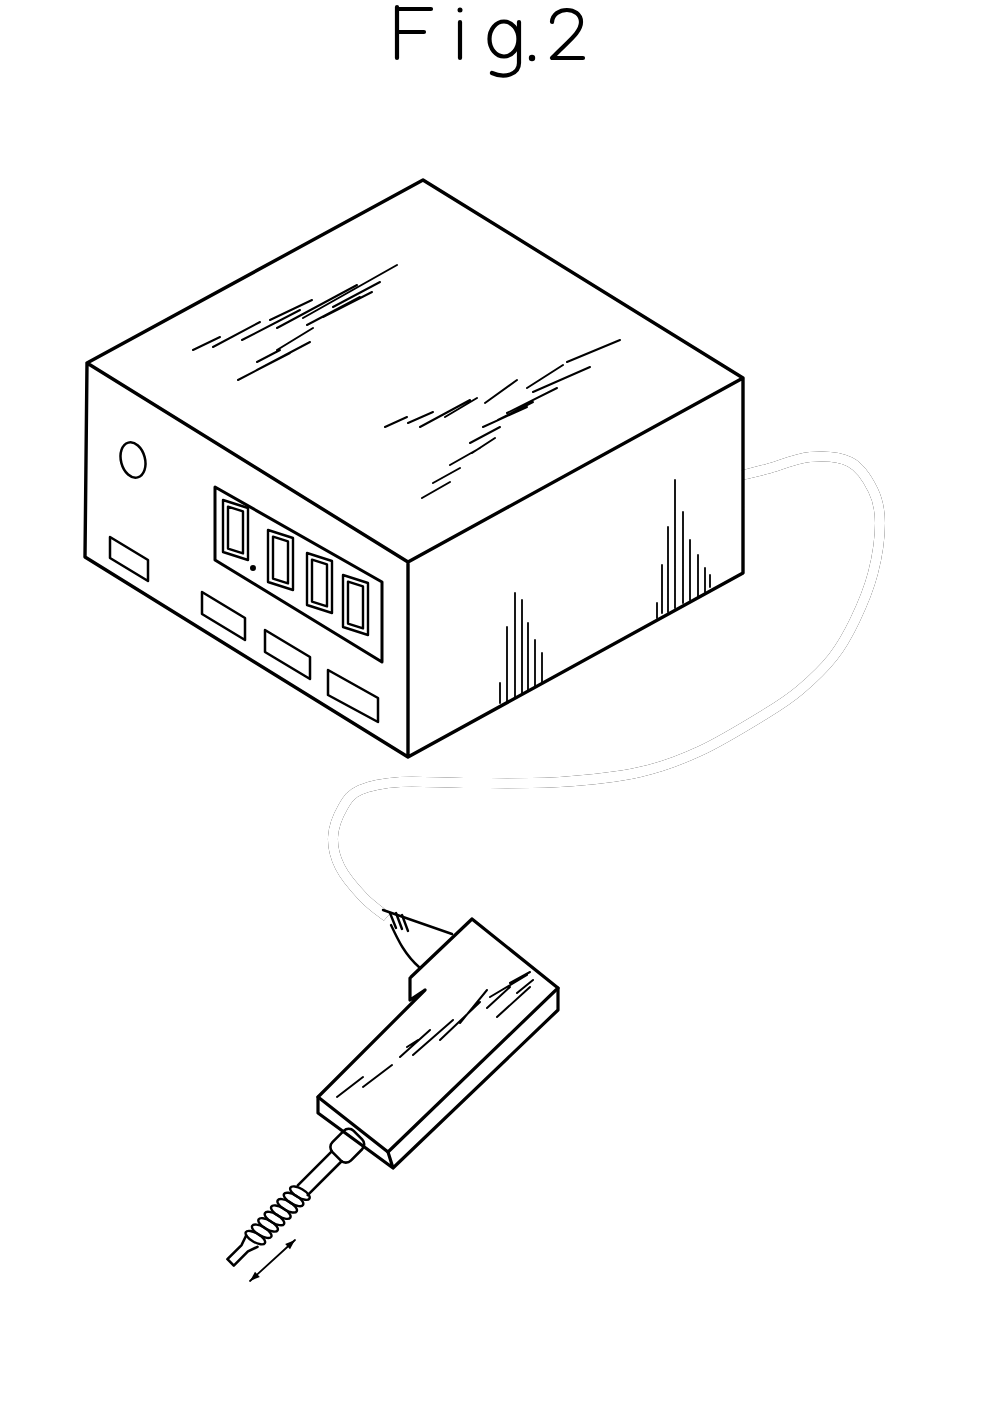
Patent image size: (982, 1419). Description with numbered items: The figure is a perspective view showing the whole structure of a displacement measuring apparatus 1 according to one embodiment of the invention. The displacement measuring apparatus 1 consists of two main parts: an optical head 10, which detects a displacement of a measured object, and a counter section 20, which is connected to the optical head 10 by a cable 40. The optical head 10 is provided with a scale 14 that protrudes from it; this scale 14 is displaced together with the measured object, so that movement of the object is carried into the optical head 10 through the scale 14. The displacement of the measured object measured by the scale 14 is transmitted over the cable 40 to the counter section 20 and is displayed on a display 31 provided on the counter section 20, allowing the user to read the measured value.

The displacement measuring apparatus 1 is at (658, 238).
The counter section 20 is at (198, 283).
The display 31 is at (297, 532).
The cable 40 is at (760, 727).
The optical head 10 is at (550, 915).
The scale 14 is at (330, 1178).